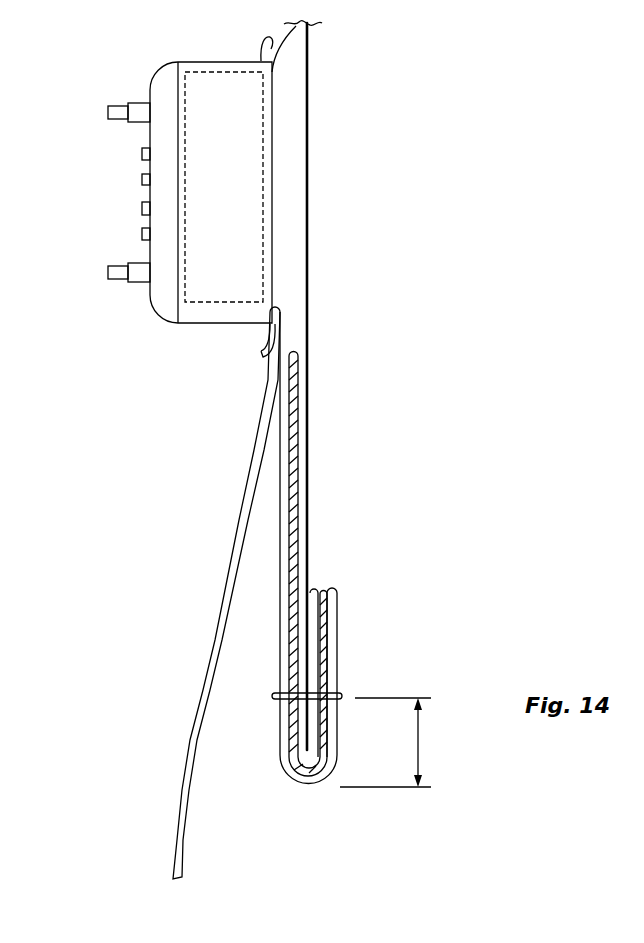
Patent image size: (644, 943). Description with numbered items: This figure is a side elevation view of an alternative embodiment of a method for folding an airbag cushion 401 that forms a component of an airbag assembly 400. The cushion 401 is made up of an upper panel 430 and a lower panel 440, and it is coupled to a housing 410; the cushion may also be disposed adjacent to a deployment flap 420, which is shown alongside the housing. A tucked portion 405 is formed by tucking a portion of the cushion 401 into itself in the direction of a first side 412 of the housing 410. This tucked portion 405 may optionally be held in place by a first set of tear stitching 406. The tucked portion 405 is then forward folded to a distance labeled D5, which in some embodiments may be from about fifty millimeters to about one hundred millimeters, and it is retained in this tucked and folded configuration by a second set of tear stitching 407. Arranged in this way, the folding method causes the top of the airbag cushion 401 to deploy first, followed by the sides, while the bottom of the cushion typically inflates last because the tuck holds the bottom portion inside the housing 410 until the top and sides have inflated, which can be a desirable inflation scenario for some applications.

The airbag assembly 400 is at (386, 101).
The airbag cushion 401 is at (318, 241).
The tucked portion 405 is at (292, 540).
The first set of tear stitching 406 is at (309, 770).
The second set of tear stitching 407 is at (274, 700).
The housing 410 is at (139, 73).
The first side 412 is at (215, 324).
The deployment flap 420 is at (212, 638).
The upper panel 430 is at (310, 32).
The lower panel 440 is at (294, 26).